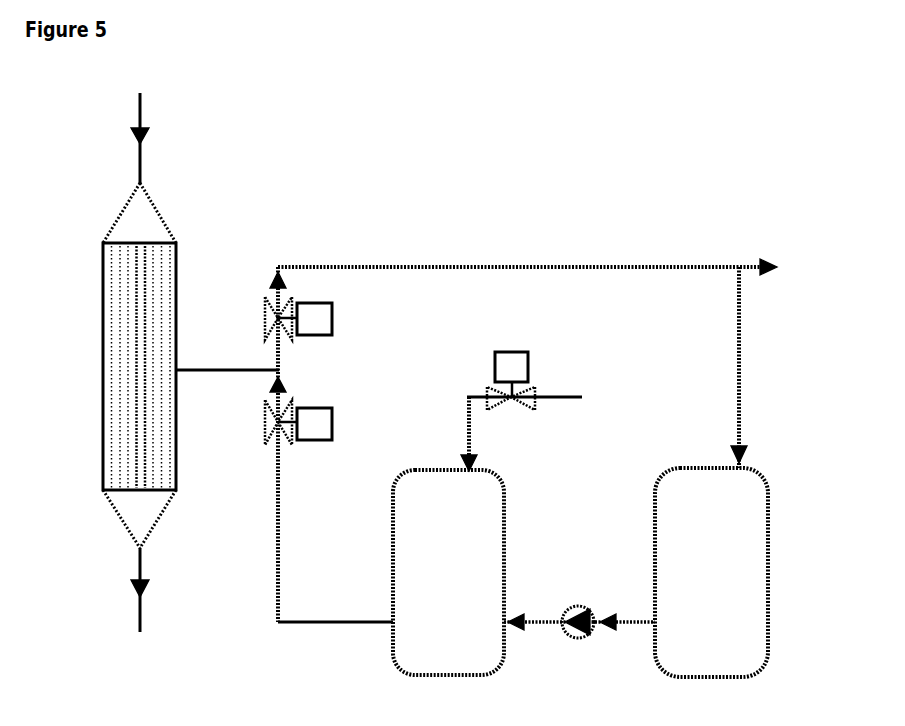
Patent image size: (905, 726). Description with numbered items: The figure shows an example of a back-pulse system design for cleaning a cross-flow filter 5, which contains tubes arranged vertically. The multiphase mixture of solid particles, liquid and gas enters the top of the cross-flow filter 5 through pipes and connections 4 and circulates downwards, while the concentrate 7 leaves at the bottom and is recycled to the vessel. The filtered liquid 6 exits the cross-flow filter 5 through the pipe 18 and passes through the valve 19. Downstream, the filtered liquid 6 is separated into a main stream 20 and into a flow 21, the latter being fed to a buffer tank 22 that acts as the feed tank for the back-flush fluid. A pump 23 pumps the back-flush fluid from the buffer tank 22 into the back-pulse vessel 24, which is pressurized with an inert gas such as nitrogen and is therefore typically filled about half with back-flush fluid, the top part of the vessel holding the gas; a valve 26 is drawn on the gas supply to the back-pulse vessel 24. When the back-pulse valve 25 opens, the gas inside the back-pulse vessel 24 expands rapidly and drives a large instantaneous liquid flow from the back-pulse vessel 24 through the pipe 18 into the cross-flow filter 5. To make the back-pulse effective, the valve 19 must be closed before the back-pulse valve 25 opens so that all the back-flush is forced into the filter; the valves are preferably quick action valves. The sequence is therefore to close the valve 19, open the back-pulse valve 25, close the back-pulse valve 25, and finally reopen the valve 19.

The pipes and connections 4 is at (140, 101).
The cross-flow filter 5 is at (103, 273).
The concentrate 7 is at (140, 607).
The pipe 18 is at (198, 370).
The filtered liquid 6 is at (507, 267).
The valve 19 is at (332, 318).
The back-pulse valve 25 is at (332, 422).
The control valve 26 is at (528, 362).
The main stream 20 is at (751, 263).
The flow 21 is at (739, 349).
The buffer tank 22 is at (711, 572).
The back-pulse vessel 24 is at (448, 572).
The pump 23 is at (577, 639).